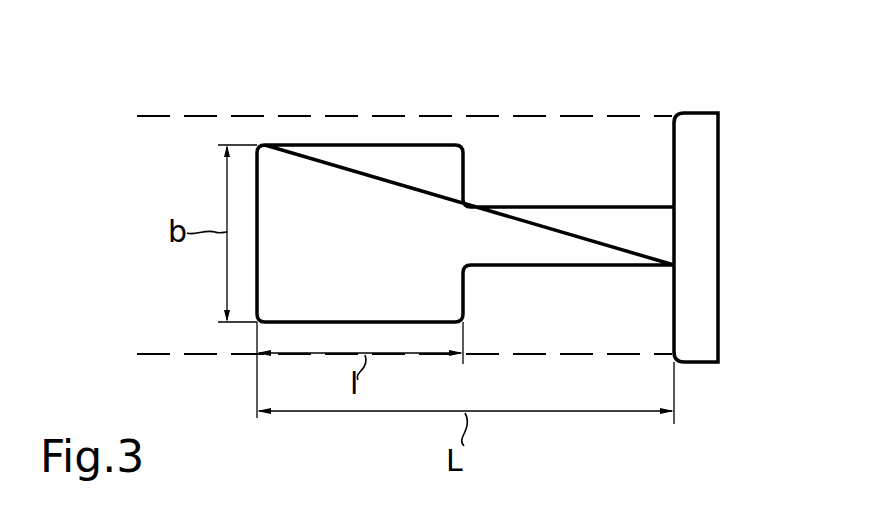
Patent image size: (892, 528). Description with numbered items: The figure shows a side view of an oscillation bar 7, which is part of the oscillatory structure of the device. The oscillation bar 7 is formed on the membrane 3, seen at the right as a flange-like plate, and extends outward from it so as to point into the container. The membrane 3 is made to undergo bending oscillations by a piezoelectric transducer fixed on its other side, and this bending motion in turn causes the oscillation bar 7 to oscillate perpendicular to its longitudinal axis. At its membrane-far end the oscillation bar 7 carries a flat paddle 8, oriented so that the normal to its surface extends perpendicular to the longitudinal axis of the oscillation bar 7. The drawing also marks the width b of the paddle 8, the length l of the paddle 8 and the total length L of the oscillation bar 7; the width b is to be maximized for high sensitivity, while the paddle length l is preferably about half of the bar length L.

The membrane 3 is at (687, 289).
The oscillation bar 7 is at (297, 60).
The paddle 8 is at (452, 298).